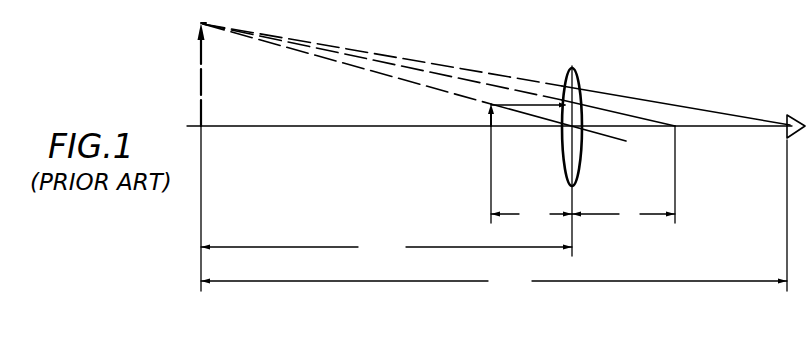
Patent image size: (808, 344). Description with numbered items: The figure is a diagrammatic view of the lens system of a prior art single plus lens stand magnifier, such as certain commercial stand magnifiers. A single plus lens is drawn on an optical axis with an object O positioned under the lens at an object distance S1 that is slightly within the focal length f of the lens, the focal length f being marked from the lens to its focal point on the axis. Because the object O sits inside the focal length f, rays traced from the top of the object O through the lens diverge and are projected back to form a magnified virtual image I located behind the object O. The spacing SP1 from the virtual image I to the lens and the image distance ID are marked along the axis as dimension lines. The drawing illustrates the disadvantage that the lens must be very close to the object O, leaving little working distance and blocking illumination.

The virtual image I is at (201, 78).
The object O is at (490, 112).
The object distance S1 is at (531, 215).
The focal length f is at (623, 215).
The image-to-lens spacing SP1 is at (386, 248).
The image distance ID is at (494, 282).